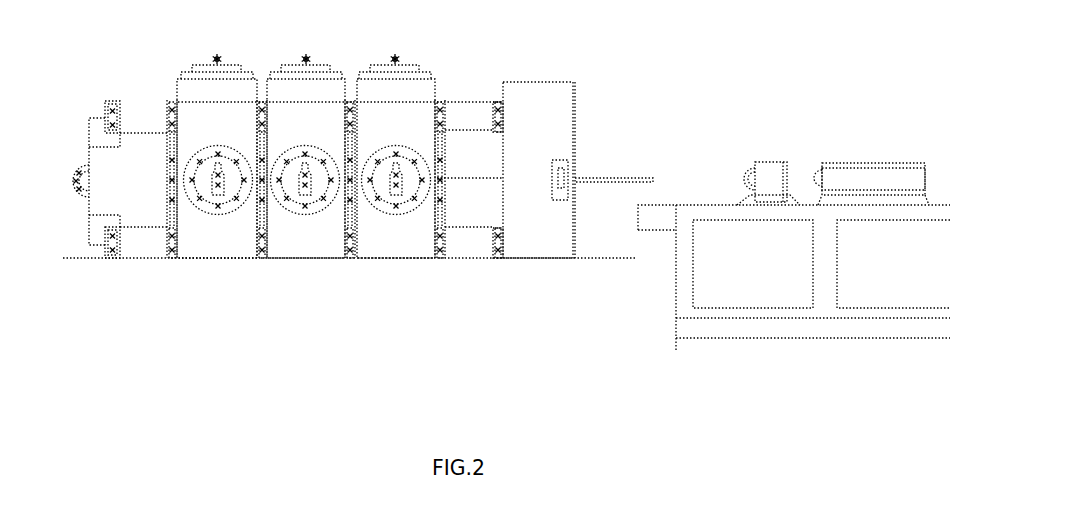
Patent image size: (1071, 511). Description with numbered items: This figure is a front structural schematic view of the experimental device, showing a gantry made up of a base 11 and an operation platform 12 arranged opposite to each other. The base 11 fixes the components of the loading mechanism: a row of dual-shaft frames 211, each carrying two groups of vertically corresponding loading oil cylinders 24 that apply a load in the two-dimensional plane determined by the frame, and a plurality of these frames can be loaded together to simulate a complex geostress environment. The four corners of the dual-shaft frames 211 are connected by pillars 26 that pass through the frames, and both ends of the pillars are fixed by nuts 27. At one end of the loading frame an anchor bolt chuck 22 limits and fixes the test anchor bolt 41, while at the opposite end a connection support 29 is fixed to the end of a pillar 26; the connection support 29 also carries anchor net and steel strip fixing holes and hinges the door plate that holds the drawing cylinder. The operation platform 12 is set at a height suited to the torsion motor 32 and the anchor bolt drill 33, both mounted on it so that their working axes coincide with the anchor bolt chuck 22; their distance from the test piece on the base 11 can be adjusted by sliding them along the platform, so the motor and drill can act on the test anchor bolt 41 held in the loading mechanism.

The base 11 is at (267, 352).
The operation platform 12 is at (835, 347).
The anchor bolt chuck 22 is at (80, 187).
The loading oil cylinder 24 is at (307, 57).
The pillar 26 is at (470, 257).
The nut 27 is at (172, 260).
The connection support 29 is at (540, 80).
The torsion motor 32 is at (767, 163).
The anchor bolt drill 33 is at (870, 163).
The test anchor bolt 41 is at (600, 177).
The dual-shaft frame 211 is at (398, 252).